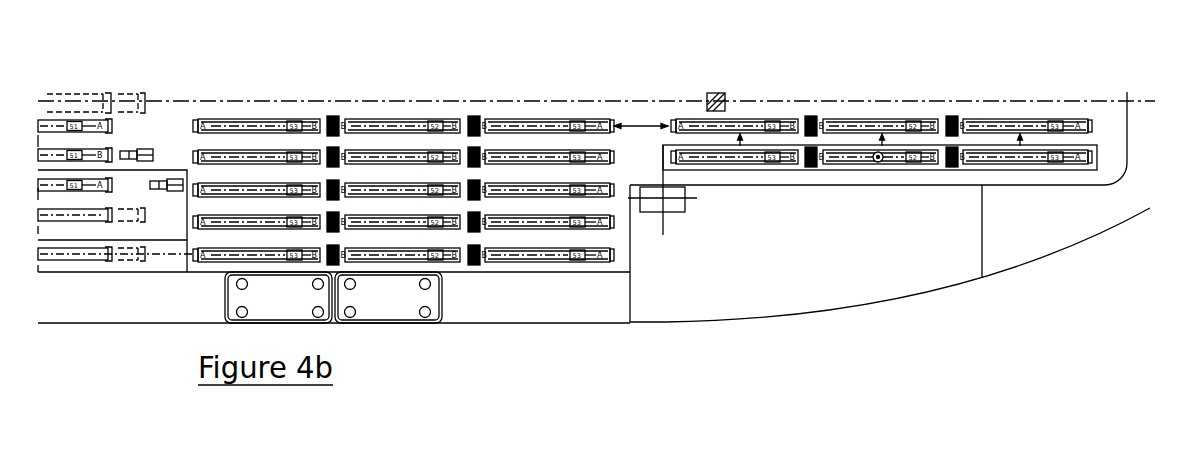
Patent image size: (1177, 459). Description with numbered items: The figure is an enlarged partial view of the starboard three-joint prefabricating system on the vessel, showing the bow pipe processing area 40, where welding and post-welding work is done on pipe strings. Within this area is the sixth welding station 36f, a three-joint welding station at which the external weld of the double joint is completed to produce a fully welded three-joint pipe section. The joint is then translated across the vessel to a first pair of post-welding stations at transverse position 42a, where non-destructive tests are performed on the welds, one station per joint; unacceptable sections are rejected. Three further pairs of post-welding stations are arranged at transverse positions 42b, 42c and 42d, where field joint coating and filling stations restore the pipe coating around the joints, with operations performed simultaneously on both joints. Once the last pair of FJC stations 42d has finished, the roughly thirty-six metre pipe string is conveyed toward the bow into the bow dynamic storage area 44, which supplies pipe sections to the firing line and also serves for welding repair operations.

The bow pipe processing area 40 is at (608, 88).
The first pair of post-welding stations 42a is at (417, 225).
The pair of post-welding stations 42b is at (420, 185).
The pair of post-welding stations 42c is at (440, 160).
The last pair of FJC stations 42d is at (460, 135).
The sixth welding station 36f is at (397, 248).
The bow dynamic storage area 44 is at (902, 205).